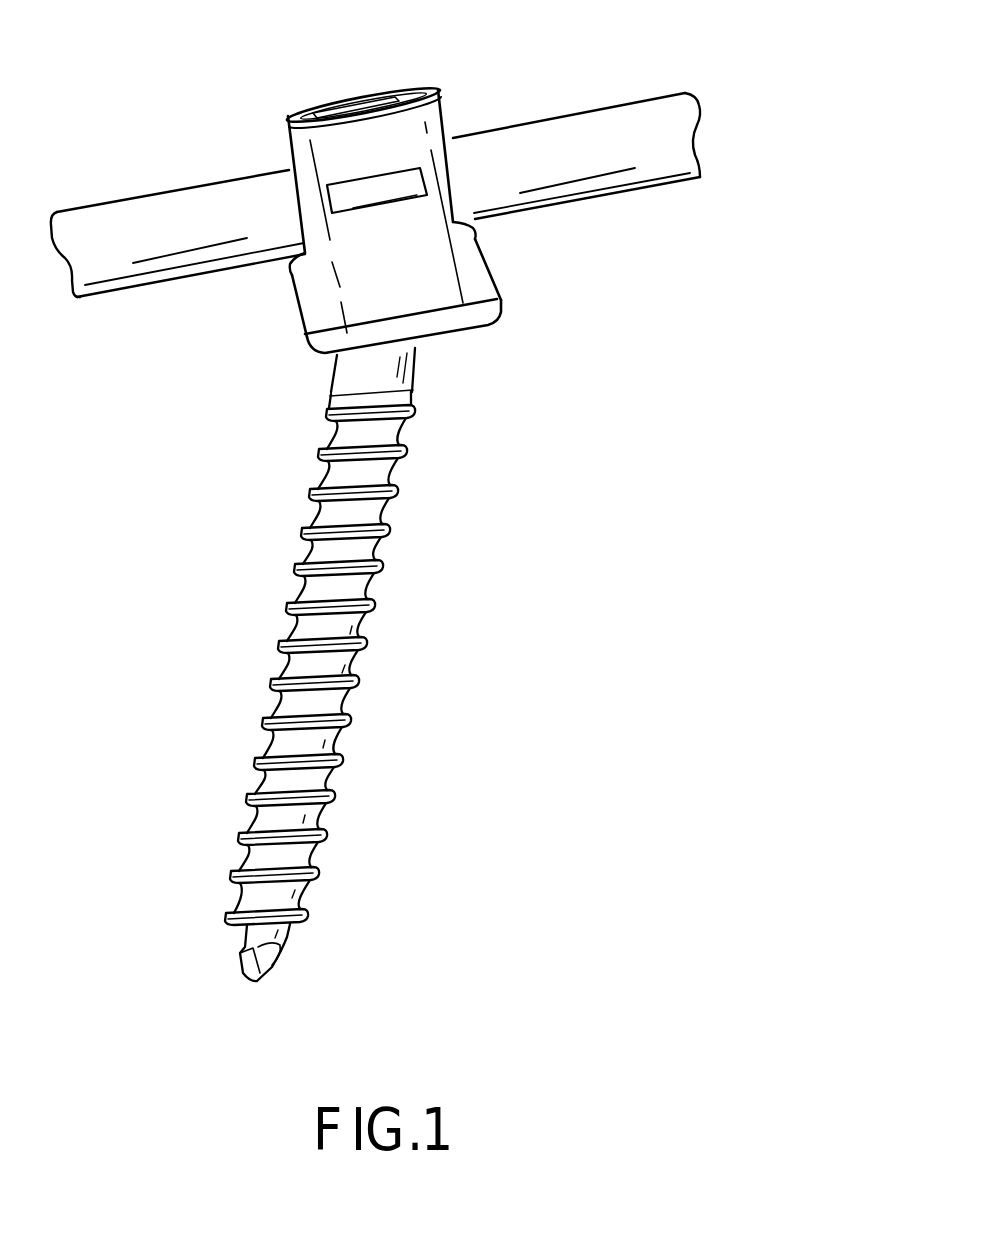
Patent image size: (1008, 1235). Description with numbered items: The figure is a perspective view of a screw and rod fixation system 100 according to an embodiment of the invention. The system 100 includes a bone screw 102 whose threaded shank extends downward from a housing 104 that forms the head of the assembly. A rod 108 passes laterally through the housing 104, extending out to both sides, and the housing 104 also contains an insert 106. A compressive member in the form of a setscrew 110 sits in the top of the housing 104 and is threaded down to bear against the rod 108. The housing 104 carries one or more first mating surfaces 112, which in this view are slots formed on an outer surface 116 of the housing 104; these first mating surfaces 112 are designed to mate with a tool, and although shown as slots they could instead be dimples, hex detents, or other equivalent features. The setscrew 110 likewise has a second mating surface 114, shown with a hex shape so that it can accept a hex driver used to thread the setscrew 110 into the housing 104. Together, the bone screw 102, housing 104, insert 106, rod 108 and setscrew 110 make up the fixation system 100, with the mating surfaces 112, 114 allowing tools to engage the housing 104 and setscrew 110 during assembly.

The screw and rod fixation system 100 is at (745, 207).
The bone screw 102 is at (357, 692).
The housing 104 is at (431, 206).
The insert 106 is at (507, 235).
The rod 108 is at (601, 122).
The setscrew 110 is at (382, 92).
The first mating surfaces 112 is at (340, 195).
The second mating surface 114 is at (340, 108).
The outer surface 116 is at (310, 302).